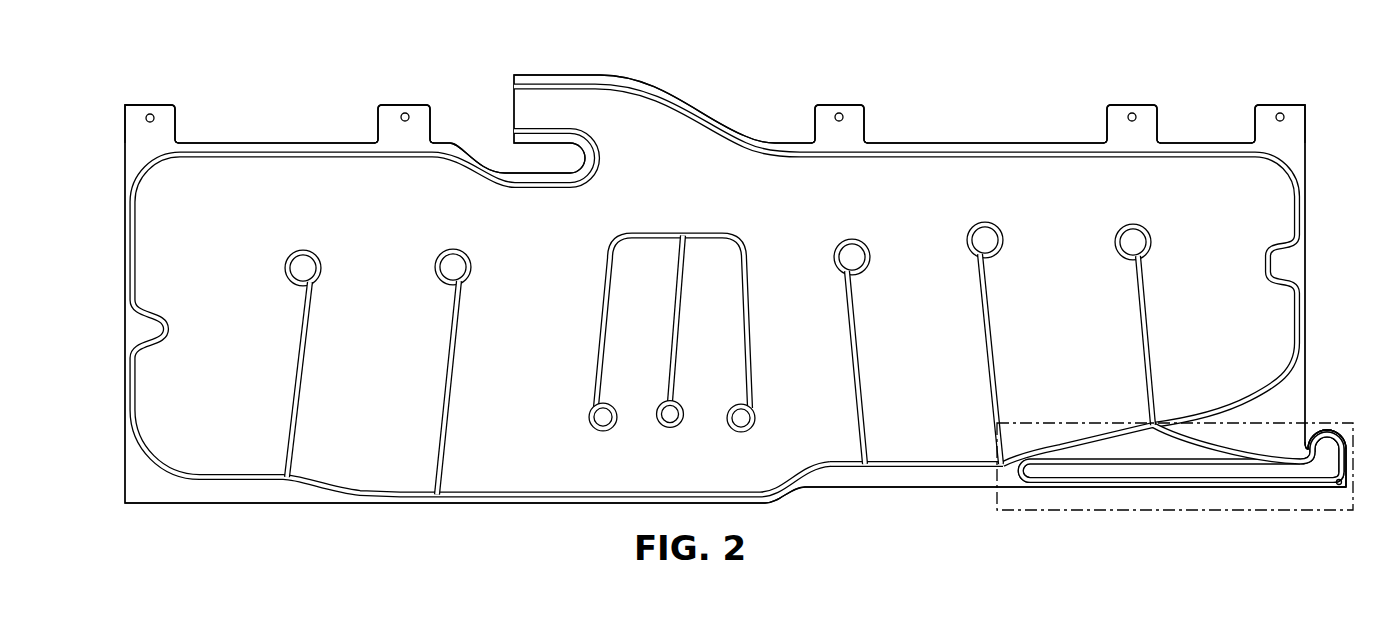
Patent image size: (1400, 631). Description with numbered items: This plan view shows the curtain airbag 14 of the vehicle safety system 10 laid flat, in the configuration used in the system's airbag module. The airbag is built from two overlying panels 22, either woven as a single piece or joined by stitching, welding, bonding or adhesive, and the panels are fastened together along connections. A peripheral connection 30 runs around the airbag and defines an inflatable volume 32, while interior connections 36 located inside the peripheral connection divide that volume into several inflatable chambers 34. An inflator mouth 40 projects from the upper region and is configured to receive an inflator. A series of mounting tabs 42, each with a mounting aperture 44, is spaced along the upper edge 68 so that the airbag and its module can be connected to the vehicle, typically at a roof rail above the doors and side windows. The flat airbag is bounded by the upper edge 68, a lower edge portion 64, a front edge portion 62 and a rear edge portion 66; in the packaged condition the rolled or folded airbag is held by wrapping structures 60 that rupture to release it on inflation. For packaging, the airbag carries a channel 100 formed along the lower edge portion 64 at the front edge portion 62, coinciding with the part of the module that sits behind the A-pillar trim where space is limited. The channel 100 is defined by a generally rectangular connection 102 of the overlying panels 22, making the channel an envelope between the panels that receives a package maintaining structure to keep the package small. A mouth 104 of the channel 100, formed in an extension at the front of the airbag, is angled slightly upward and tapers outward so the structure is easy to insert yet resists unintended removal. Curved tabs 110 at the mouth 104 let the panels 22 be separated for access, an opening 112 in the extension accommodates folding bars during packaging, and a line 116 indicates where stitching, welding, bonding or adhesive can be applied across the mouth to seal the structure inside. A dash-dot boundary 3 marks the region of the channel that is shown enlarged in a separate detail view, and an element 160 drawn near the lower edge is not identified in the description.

The detail view boundary 3 is at (1130, 512).
The vehicle safety system 10 is at (183, 65).
The curtain airbag 14 is at (250, 52).
The overlying panels 22 is at (173, 195).
The peripheral connection 30 is at (131, 272).
The inflatable volume 32 is at (160, 413).
The inflatable chambers 34 is at (250, 397).
The interior connections 36 is at (447, 390).
The inflator mouth 40 is at (547, 108).
The mounting tabs 42 is at (136, 109).
The mounting apertures 44 is at (152, 114).
The wrapping structures 60 is at (937, 473).
The front edge portion 62 is at (1283, 257).
The lower edge portion 64 is at (193, 448).
The rear edge portion 66 is at (140, 336).
The upper edge 68 is at (963, 143).
The channel 100 is at (1153, 472).
The connection 102 is at (1196, 461).
The mouth 104 is at (1336, 440).
The curved tabs 110 is at (1320, 460).
The opening 112 is at (1339, 487).
The line 116 is at (1346, 442).
The bottom edge 160 is at (1290, 488).